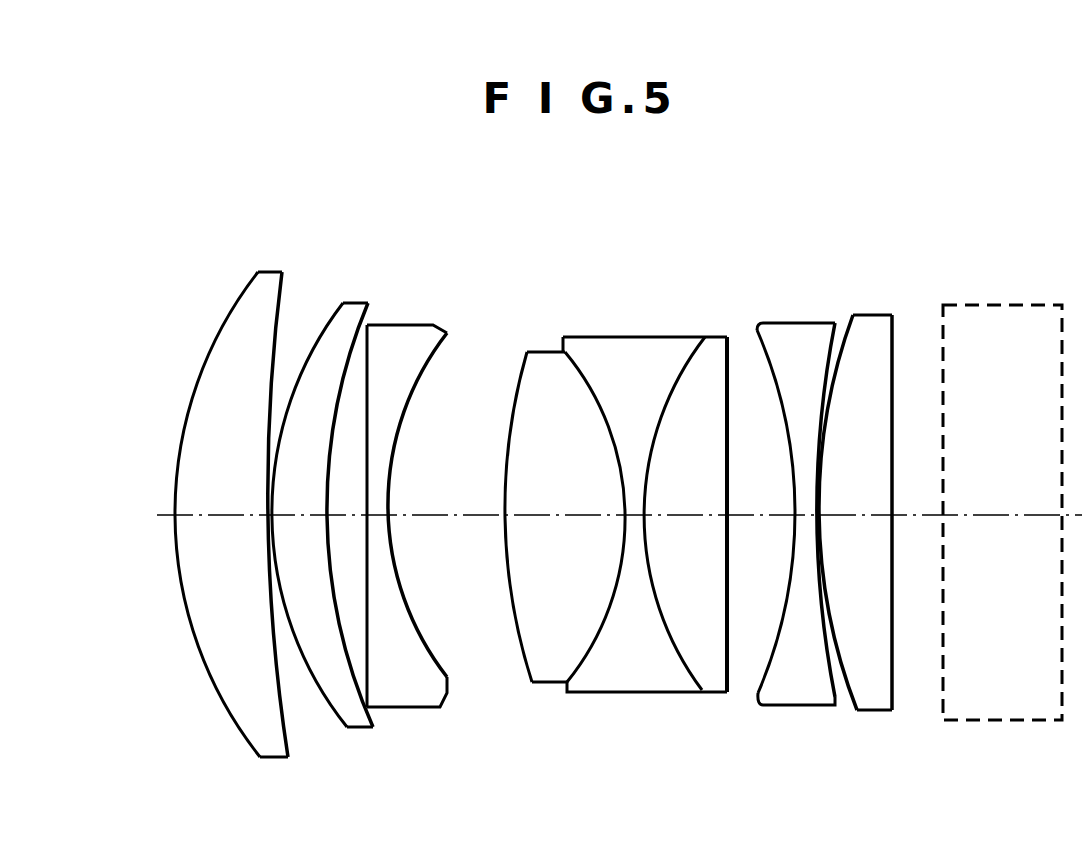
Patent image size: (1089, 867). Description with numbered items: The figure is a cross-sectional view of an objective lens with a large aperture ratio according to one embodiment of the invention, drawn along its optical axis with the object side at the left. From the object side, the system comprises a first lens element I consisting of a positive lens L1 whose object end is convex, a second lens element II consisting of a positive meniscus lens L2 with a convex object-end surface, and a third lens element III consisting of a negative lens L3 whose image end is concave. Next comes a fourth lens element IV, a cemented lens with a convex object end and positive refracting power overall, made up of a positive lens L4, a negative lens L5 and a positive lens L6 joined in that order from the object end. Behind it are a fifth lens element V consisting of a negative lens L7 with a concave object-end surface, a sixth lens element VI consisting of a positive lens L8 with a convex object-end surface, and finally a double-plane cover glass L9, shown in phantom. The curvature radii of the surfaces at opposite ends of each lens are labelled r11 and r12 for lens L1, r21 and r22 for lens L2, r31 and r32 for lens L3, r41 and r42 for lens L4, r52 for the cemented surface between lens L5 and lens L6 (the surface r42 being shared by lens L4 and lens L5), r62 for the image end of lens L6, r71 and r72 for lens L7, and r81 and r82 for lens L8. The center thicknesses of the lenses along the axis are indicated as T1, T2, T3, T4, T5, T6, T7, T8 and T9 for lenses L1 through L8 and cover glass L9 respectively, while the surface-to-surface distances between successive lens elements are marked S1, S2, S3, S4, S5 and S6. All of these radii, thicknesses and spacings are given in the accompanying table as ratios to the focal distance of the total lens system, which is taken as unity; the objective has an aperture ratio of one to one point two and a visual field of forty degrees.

The first lens element I is at (275, 233).
The second lens element II is at (363, 233).
The third lens element III is at (377, 233).
The fourth lens element IV is at (525, 233).
The fifth lens element V is at (743, 227).
The sixth lens element VI is at (842, 227).
The positive lens L1 is at (248, 418).
The positive meniscus lens L2 is at (330, 432).
The negative lens L3 is at (421, 381).
The positive lens L4 is at (578, 435).
The negative lens L5 is at (655, 392).
The positive lens L6 is at (713, 445).
The negative lens L7 is at (818, 377).
The positive lens L8 is at (883, 422).
The cover glass L9 is at (1022, 395).
The curvature radius r11 is at (230, 312).
The curvature radius r12 is at (282, 297).
The curvature radius r21 is at (330, 350).
The curvature radius r22 is at (362, 362).
The curvature radius r31 is at (367, 360).
The curvature radius r32 is at (415, 400).
The curvature radius r41 is at (518, 380).
The curvature radius r42 is at (581, 370).
The curvature radius r52 is at (680, 363).
The curvature radius r62 is at (728, 350).
The curvature radius r71 is at (764, 370).
The curvature radius r72 is at (826, 350).
The curvature radius r81 is at (848, 338).
The curvature radius r82 is at (897, 343).
The center thickness T1 is at (212, 501).
The center thickness T2 is at (293, 501).
The center thickness T3 is at (382, 512).
The center thickness T4 is at (557, 501).
The center thickness T5 is at (637, 515).
The center thickness T6 is at (677, 501).
The center thickness T7 is at (805, 515).
The center thickness T8 is at (852, 499).
The center thickness T9 is at (998, 498).
The surface-to-surface distance S1 is at (265, 519).
The surface-to-surface distance S2 is at (345, 518).
The surface-to-surface distance S3 is at (446, 541).
The surface-to-surface distance S4 is at (756, 534).
The surface-to-surface distance S5 is at (820, 520).
The surface-to-surface distance S6 is at (919, 534).